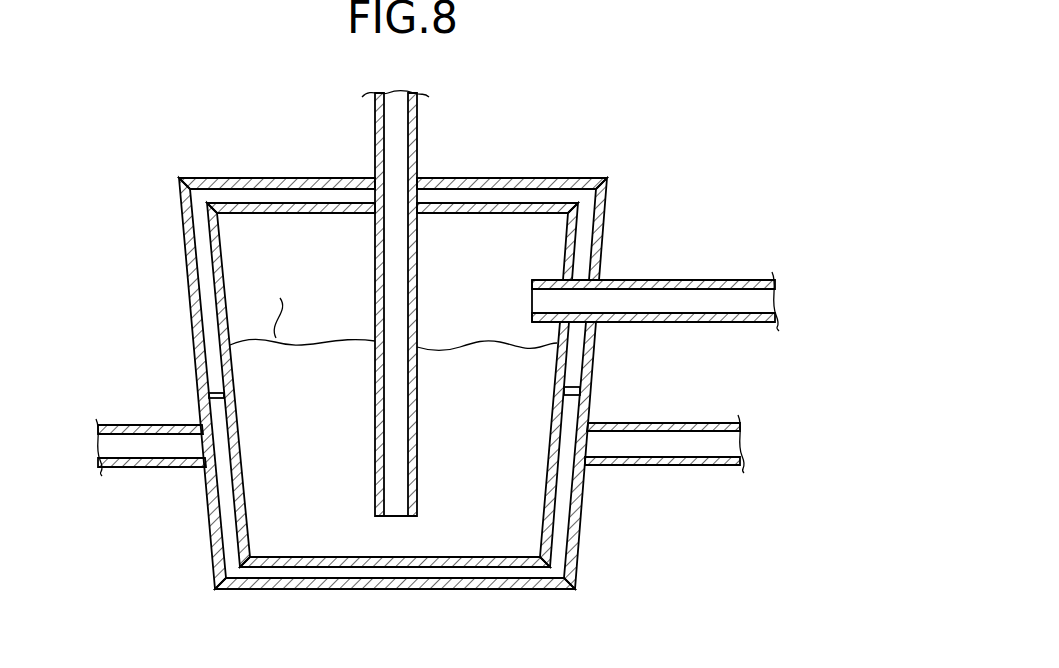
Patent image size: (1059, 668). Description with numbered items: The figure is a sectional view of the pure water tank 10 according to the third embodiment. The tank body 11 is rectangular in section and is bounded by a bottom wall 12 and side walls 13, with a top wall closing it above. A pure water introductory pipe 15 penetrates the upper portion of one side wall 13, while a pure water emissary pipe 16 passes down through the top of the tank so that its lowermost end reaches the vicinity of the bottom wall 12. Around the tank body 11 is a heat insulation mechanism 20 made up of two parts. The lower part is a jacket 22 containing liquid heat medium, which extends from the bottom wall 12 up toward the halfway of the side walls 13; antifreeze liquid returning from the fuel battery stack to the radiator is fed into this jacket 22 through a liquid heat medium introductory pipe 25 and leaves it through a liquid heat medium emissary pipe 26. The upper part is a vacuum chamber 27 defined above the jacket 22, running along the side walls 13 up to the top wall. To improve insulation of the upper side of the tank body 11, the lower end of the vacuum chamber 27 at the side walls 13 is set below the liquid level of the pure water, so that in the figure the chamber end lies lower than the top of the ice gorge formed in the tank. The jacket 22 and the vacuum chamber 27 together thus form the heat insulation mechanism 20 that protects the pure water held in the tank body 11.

The pure water tank 10 is at (558, 163).
The tank body 11 is at (225, 231).
The bottom wall 12 is at (334, 556).
The side walls 13 is at (243, 476).
The pure water introductory pipe 15 is at (716, 280).
The pure water emissary pipe 16 is at (419, 115).
The heat insulation mechanism 20 is at (186, 328).
The jacket 22 is at (227, 518).
The liquid heat medium introductory pipe 25 is at (134, 425).
The liquid heat medium emissary pipe 26 is at (692, 467).
The vacuum chamber 27 is at (258, 190).